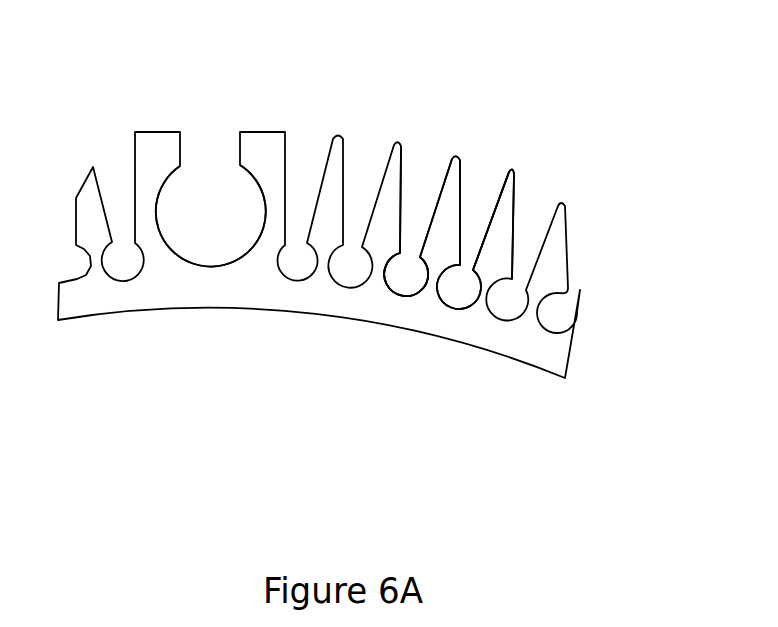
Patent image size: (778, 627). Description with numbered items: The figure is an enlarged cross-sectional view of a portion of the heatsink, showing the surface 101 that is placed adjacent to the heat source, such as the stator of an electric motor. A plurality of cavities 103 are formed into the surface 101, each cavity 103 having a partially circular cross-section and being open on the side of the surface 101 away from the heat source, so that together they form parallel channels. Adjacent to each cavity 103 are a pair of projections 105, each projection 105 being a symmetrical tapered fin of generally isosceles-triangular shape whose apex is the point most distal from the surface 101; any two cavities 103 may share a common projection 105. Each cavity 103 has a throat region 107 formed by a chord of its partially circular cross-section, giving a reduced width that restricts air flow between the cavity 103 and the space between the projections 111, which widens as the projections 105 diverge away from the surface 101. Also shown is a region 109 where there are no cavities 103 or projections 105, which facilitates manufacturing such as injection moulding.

The surface 101 is at (258, 287).
The cavity 103 is at (403, 275).
The projection 105 is at (512, 185).
The throat region 107 is at (407, 244).
The region 109 is at (195, 245).
The space between the projections 111 is at (477, 153).